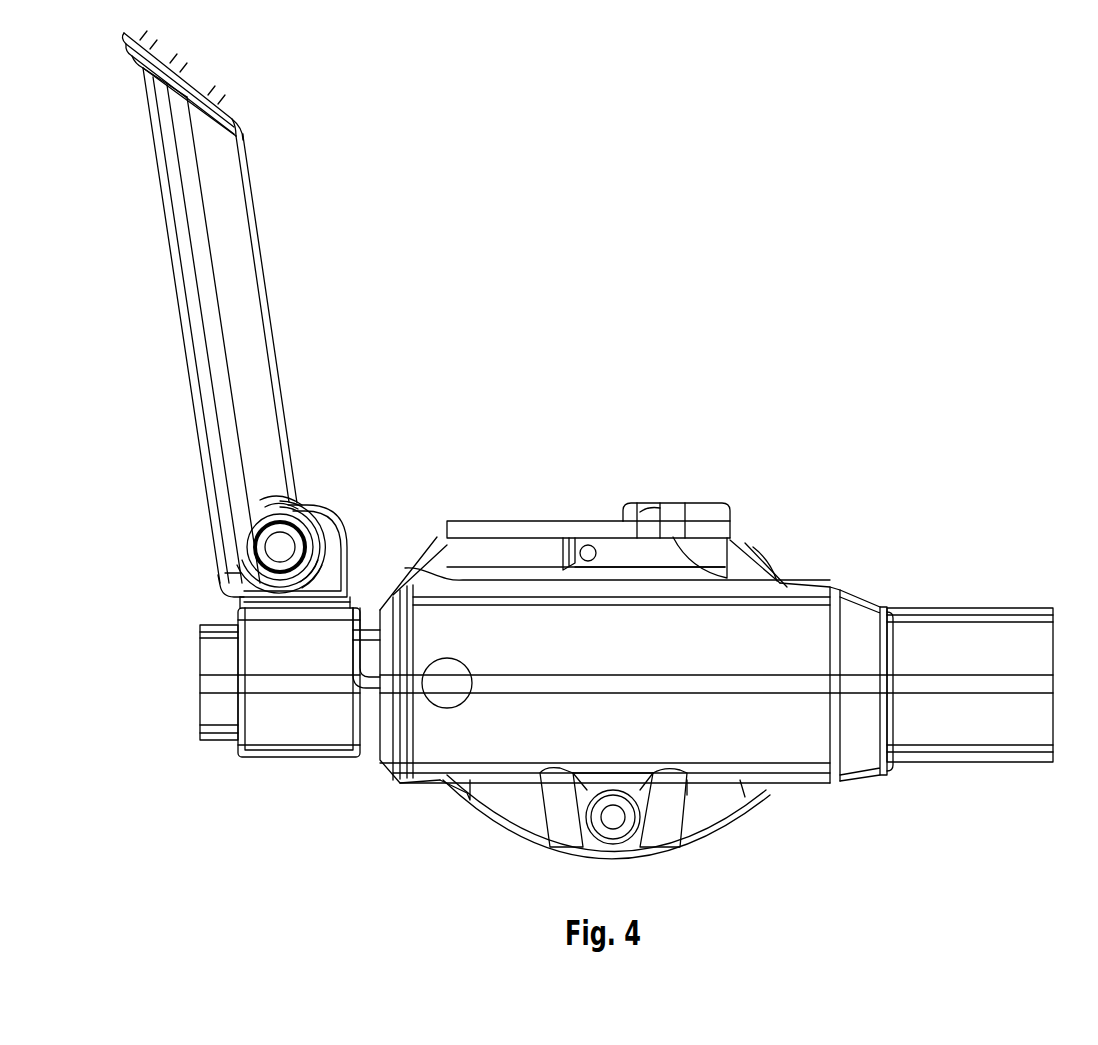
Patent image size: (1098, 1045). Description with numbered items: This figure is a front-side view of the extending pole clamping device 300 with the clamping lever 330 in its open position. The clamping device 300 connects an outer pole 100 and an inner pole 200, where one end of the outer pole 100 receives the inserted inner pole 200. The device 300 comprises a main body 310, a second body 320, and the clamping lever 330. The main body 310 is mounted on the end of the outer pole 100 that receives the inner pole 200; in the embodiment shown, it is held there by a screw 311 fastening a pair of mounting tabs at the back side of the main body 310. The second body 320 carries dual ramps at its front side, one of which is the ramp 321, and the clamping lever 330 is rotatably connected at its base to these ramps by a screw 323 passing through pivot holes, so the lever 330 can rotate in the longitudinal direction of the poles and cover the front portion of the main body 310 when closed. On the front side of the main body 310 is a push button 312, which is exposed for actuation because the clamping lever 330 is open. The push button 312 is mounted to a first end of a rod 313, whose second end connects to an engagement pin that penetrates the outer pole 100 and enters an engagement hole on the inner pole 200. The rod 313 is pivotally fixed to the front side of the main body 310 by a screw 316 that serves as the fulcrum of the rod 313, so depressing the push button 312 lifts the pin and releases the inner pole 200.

The outer pole 100 is at (950, 630).
The inner pole 200 is at (212, 660).
The extending pole clamping device 300 is at (673, 306).
The main body 310 is at (805, 763).
The screw 311 is at (597, 836).
The push button 312 is at (690, 505).
The rod 313 is at (540, 521).
The screw 316 is at (588, 546).
The second body 320 is at (292, 745).
The ramp 321 is at (325, 541).
The screw 323 is at (280, 547).
The clamping lever 330 is at (240, 250).